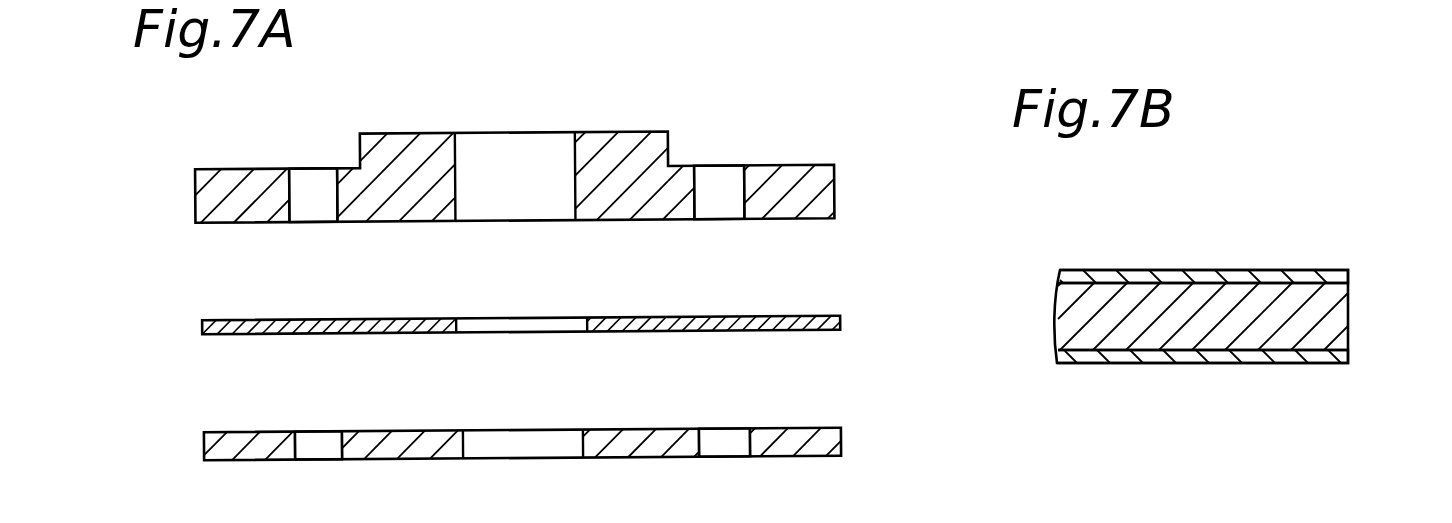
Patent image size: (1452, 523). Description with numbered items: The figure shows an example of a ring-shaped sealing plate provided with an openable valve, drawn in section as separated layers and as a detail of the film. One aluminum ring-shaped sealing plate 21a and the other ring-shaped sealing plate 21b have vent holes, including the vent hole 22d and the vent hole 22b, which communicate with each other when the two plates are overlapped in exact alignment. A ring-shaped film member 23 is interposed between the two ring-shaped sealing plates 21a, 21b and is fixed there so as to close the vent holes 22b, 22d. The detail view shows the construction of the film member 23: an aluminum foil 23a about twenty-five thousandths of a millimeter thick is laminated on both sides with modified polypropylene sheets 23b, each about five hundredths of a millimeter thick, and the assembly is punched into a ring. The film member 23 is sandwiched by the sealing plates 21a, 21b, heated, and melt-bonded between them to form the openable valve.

In FIG. 7A, the ring-shaped sealing plate 21a is at (800, 168).
In FIG. 7A, the ring-shaped sealing plate 21b is at (807, 425).
In FIG. 7A, the vent hole 22d is at (317, 175).
In FIG. 7A, the vent hole 22b is at (718, 175).
In FIG. 7A, the ring-shaped film member 23 is at (777, 313).
In FIG. 7B, the aluminum foil 23a is at (1340, 322).
In FIG. 7B, the modified polypropylene sheet 23b is at (1252, 272).